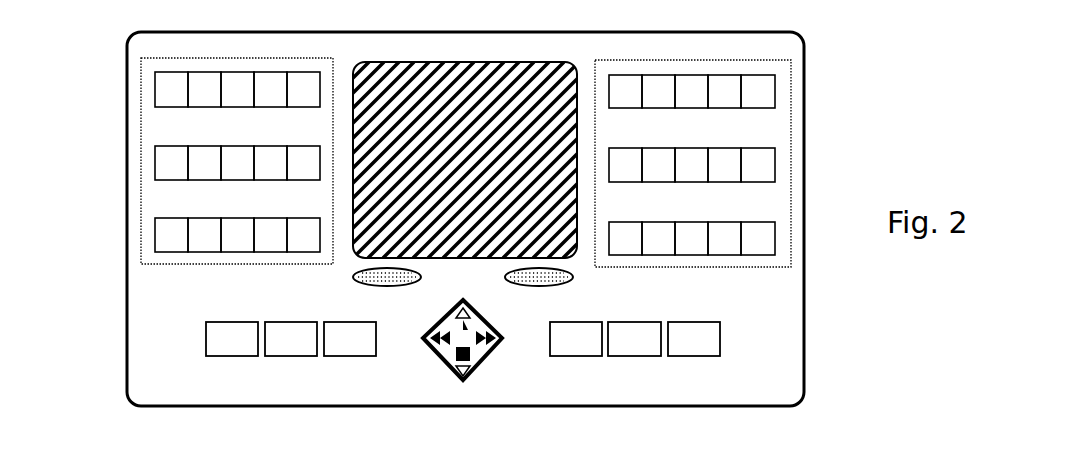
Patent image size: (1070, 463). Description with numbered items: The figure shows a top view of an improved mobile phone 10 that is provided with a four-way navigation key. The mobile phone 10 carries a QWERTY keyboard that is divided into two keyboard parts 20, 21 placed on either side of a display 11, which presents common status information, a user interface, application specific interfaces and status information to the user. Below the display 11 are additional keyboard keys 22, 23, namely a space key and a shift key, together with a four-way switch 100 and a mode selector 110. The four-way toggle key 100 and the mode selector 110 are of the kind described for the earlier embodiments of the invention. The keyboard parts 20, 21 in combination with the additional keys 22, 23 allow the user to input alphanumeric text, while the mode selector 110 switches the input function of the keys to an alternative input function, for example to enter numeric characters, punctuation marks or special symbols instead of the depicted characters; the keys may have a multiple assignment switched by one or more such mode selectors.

The mobile phone 10 is at (812, 147).
The display 11 is at (480, 50).
The keyboard part 20 is at (143, 46).
The keyboard part 21 is at (790, 50).
The additional key 22 is at (351, 314).
The additional key 23 is at (291, 364).
The four-way toggle key 100 is at (491, 374).
The mode selector 110 is at (232, 314).